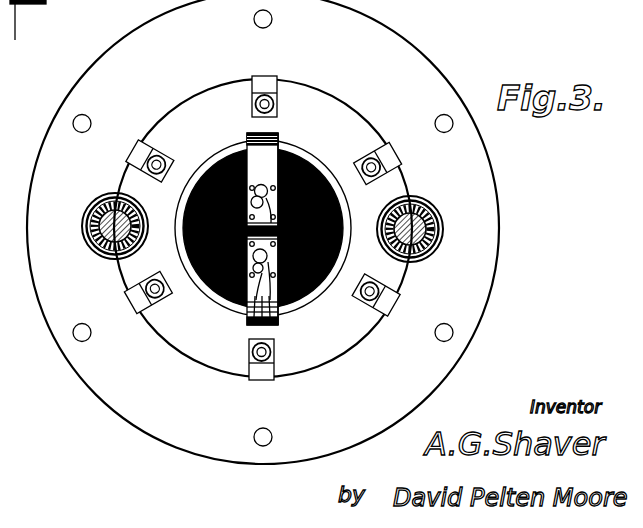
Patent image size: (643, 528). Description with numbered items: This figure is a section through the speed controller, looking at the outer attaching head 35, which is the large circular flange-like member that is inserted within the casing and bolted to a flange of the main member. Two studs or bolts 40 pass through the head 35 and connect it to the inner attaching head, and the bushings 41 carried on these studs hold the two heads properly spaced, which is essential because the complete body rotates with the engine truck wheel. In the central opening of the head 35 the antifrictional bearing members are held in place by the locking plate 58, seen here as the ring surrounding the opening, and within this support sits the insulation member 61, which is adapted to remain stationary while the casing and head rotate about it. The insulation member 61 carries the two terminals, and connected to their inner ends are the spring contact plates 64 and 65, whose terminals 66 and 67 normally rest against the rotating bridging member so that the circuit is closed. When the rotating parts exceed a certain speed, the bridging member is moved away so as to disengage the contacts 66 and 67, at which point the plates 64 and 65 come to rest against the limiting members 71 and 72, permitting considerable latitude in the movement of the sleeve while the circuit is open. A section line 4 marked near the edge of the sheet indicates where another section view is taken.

The section line 4- 4 is at (26, 19).
The outer attaching head 35 is at (475, 268).
The studs or bolts 40 is at (263, 233).
The bushings 41 is at (97, 206).
The locking plate 58 is at (338, 112).
The insulation member 61 is at (317, 292).
The spring contact plate 64 is at (256, 158).
The spring contact plate 65 is at (248, 318).
The contact terminal 66 is at (279, 146).
The contact terminal 67 is at (277, 325).
The limiting member 71 is at (263, 184).
The limiting member 72 is at (247, 327).